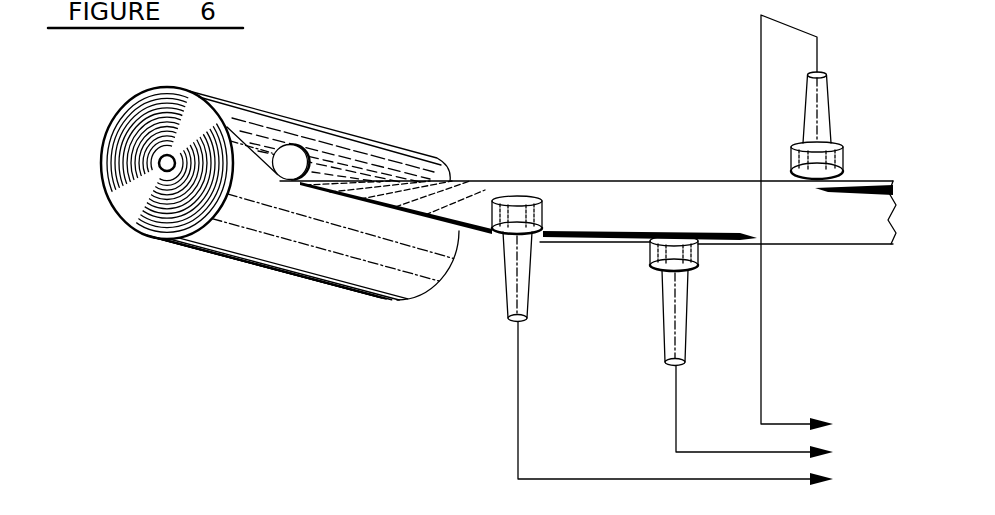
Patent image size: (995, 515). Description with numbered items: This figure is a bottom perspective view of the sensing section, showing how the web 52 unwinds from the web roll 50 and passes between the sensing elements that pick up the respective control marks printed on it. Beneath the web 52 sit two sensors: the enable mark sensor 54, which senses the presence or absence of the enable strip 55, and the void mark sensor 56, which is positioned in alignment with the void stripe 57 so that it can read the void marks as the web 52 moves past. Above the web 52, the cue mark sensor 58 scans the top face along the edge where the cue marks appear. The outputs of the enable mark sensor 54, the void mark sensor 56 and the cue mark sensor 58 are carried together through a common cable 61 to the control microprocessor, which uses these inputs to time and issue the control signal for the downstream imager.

The web roll 50 is at (96, 117).
The web 52 is at (293, 128).
The enable mark sensor 54 is at (510, 296).
The enable strip 55 is at (868, 181).
The void mark sensor 56 is at (667, 321).
The void stripe 57 is at (577, 214).
The cue mark sensor 58 is at (833, 138).
The common cable 61 is at (803, 412).